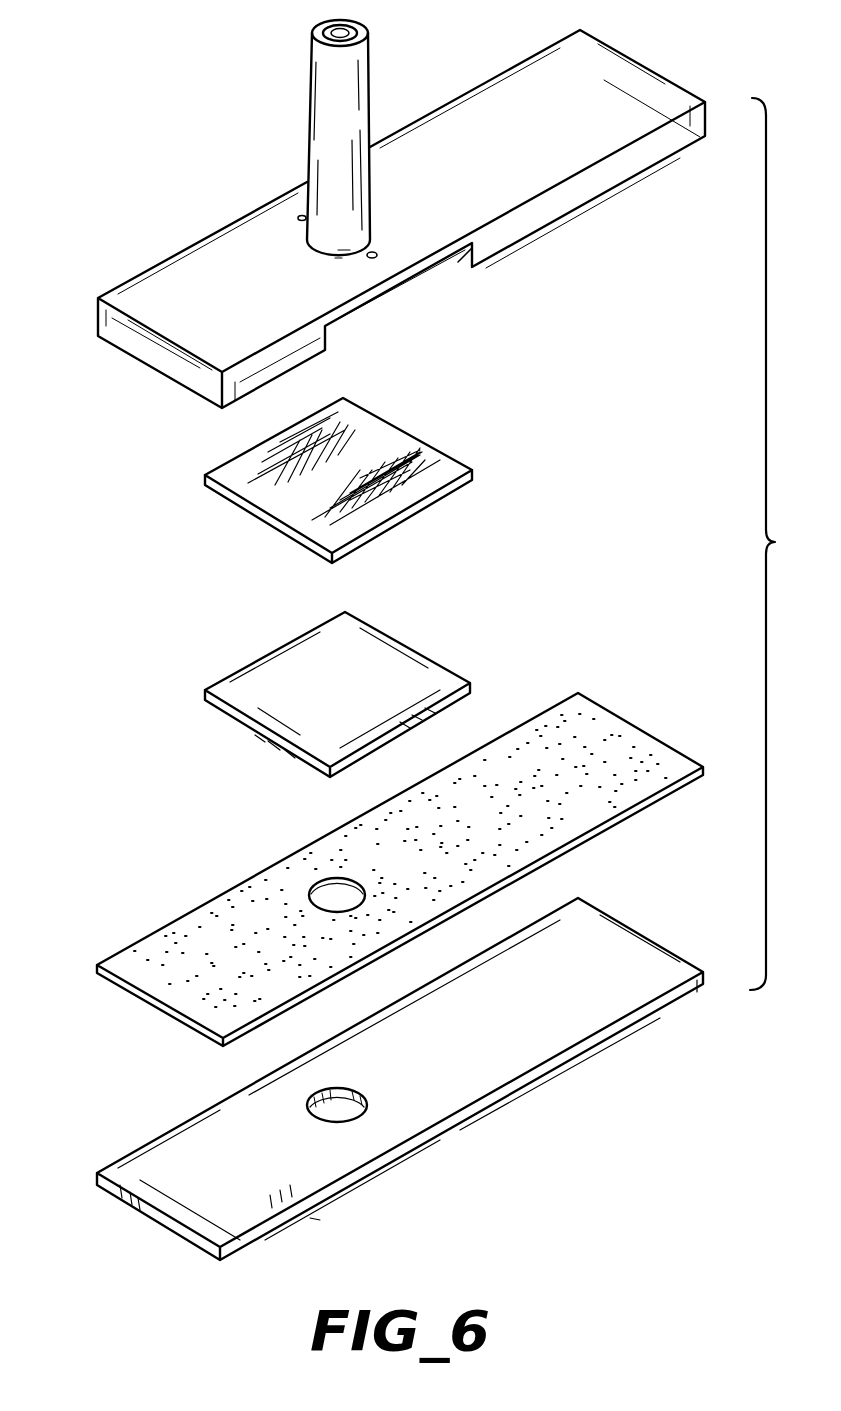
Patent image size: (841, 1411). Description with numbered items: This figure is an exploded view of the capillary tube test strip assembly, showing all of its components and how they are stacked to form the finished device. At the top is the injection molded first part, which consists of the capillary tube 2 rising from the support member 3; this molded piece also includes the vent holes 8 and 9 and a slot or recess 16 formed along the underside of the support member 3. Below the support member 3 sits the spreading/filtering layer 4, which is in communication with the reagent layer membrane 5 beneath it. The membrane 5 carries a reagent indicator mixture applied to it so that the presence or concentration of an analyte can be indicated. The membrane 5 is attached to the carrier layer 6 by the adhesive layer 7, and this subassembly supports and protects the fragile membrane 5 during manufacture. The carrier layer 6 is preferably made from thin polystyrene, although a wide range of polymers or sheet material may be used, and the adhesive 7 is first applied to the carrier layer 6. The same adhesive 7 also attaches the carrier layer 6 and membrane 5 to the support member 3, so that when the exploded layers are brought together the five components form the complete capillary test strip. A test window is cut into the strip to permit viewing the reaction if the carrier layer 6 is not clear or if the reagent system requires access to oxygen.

The capillary tube 2 is at (325, 115).
The support member 3 is at (568, 103).
The spreading/filtering layer 4 is at (417, 490).
The reagent layer membrane 5 is at (273, 670).
The carrier layer 6 is at (400, 1079).
The adhesive layer 7 is at (359, 869).
The vent hole 8 is at (300, 218).
The vent hole 9 is at (368, 258).
The slot or recess 16 is at (422, 280).